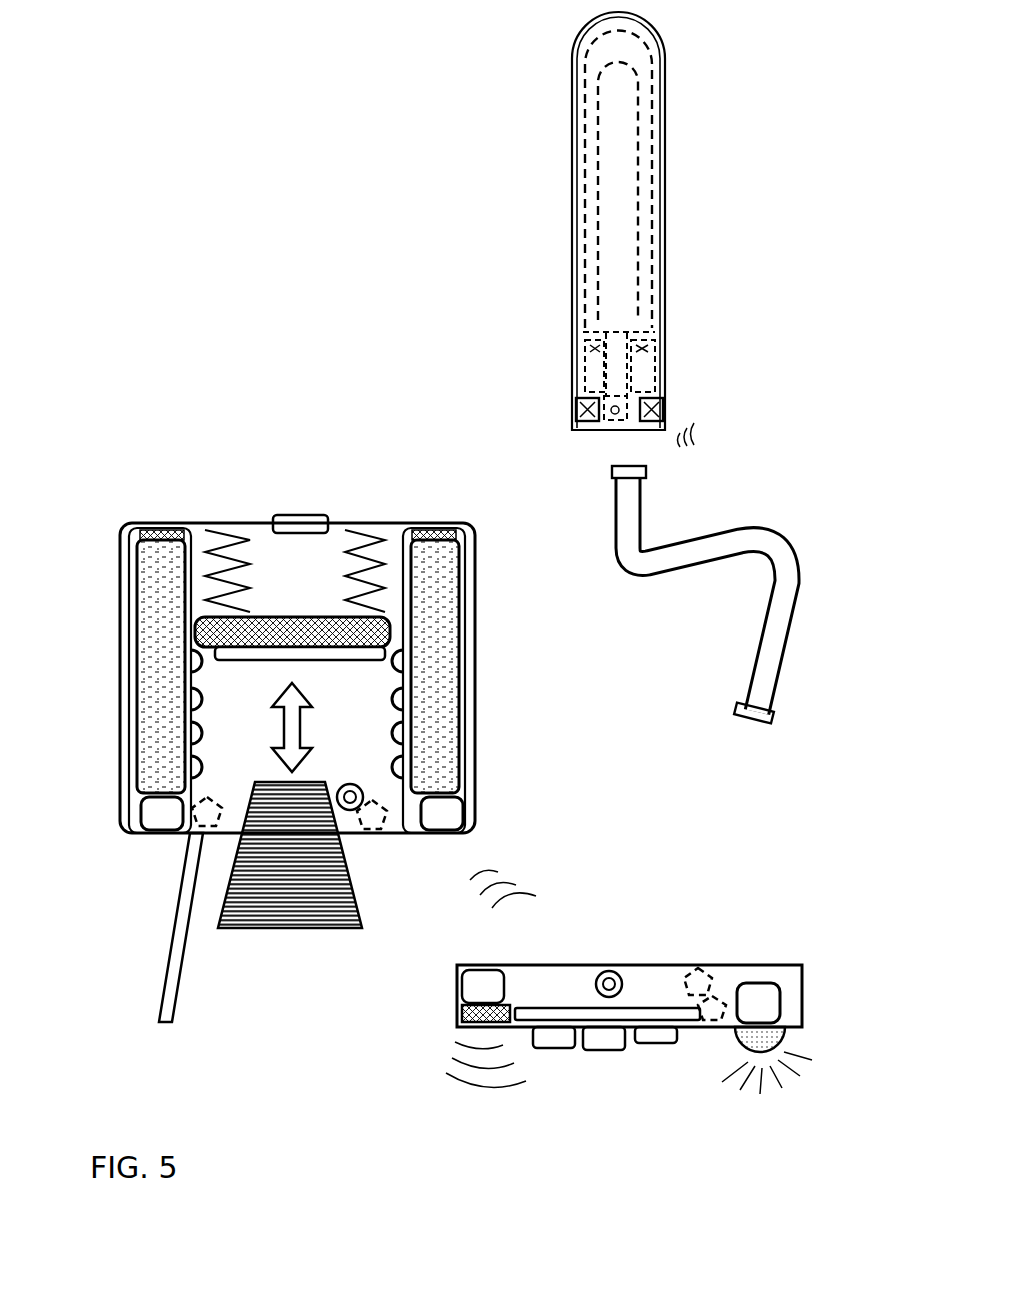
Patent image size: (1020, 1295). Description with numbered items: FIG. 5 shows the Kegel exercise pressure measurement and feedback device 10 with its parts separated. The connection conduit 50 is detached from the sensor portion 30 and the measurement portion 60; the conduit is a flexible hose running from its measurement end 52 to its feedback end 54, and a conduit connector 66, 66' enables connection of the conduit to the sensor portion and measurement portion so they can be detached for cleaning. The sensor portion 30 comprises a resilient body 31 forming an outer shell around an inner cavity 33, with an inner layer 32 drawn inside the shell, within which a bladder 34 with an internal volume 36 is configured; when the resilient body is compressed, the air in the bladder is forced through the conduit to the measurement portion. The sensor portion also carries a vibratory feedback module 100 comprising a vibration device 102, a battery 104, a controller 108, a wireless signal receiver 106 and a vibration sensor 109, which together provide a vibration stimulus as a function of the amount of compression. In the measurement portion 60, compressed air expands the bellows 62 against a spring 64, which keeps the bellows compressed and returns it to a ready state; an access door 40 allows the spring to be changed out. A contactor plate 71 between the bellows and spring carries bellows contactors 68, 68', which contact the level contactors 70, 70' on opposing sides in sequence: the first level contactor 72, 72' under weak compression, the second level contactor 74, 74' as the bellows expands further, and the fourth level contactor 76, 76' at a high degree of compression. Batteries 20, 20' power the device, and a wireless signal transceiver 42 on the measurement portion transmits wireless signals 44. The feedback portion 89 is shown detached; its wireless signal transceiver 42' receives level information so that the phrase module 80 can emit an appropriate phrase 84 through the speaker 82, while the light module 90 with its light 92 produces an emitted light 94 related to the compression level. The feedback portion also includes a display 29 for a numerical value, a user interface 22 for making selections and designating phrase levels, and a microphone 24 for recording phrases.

The Kegel exercise pressure measurement and feedback device 10 is at (460, 134).
The battery 20 is at (112, 666).
The battery 20' is at (487, 666).
The user interface 22 is at (603, 1050).
The microphone 24 is at (715, 1026).
The display 29 is at (655, 1043).
The sensor portion 30 is at (665, 70).
The resilient body 31 is at (665, 276).
The sleeve 32 is at (665, 122).
The inner cavity 33 is at (652, 180).
The bladder 34 is at (612, 230).
The internal volume 36 is at (622, 188).
The access door 40 is at (181, 940).
The wireless signal transceiver 42 is at (365, 842).
The wireless signal transceiver 42' is at (622, 940).
The wireless signals 44 is at (520, 868).
The connection conduit 50 is at (780, 567).
The measurement end 52 is at (646, 472).
The feedback end 54 is at (770, 720).
The measurement portion 60 is at (470, 522).
The bellows 62 is at (273, 540).
The spring 64 is at (305, 783).
The conduit connector 66 is at (689, 447).
The conduit connector 66' is at (760, 757).
The bellows contactor 68 is at (112, 570).
The bellows contactor 68' is at (481, 571).
The level contactors 70 is at (121, 654).
The level contactors 70' is at (480, 653).
The contactor plate 71 is at (290, 636).
The first level contactor 72 is at (118, 694).
The first level contactor 72' is at (480, 700).
The second level contactor 74 is at (118, 727).
The second level contactor 74' is at (480, 738).
The fourth level contactor 76 is at (126, 793).
The fourth level contactor 76' is at (473, 793).
The phrase module 80 is at (460, 1006).
The speaker 82 is at (463, 1020).
The phrases 84 is at (470, 1076).
The feedback portion 89 is at (722, 962).
The light module 90 is at (781, 1011).
The light 92 is at (790, 1051).
The emitted light 94 is at (780, 1063).
The vibratory feedback module 100 is at (590, 335).
The vibration device 102 is at (590, 409).
The battery 104 is at (596, 362).
The wireless signal receiver 106 is at (655, 412).
The controller 108 is at (610, 432).
The vibration sensor 109 is at (650, 340).